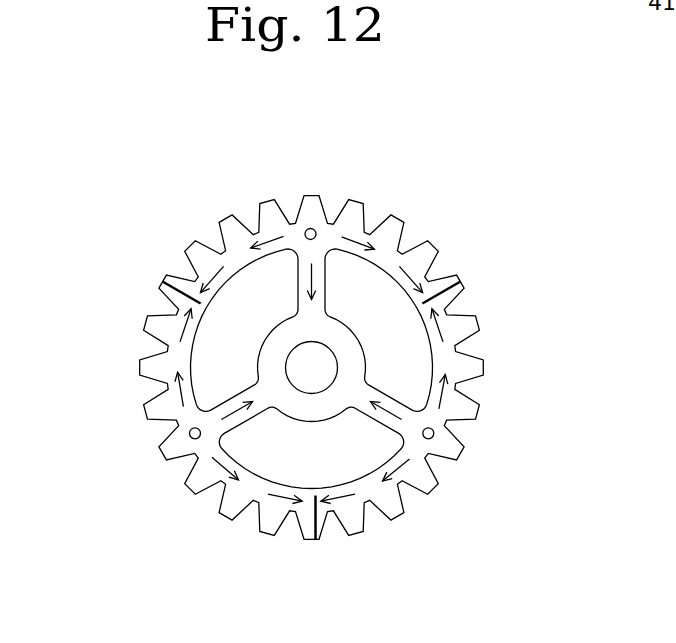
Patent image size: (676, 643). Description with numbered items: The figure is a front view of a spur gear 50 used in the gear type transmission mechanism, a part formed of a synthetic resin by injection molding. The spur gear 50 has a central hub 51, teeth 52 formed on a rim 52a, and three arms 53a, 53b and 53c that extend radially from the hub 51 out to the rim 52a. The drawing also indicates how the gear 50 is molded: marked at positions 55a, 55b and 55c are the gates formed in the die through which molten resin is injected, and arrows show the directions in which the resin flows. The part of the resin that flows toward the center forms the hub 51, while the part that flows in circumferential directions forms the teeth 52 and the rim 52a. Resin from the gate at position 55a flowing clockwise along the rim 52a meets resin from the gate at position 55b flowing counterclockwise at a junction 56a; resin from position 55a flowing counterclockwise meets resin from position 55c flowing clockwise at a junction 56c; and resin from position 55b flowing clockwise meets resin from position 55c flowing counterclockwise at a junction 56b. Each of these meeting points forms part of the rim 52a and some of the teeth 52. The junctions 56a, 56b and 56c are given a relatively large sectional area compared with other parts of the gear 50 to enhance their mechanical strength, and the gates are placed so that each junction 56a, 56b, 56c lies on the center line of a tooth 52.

The spur gear 50 is at (329, 349).
The hub 51 is at (268, 358).
The teeth 52 is at (371, 368).
The rim 52a is at (462, 348).
The arm 53a is at (300, 282).
The arm 53b is at (397, 432).
The arm 53c is at (228, 432).
The gate position 55a is at (314, 228).
The gate position 55b is at (433, 440).
The gate position 55c is at (191, 438).
The junction 56a is at (455, 280).
The junction 56b is at (318, 535).
The junction 56c is at (178, 281).